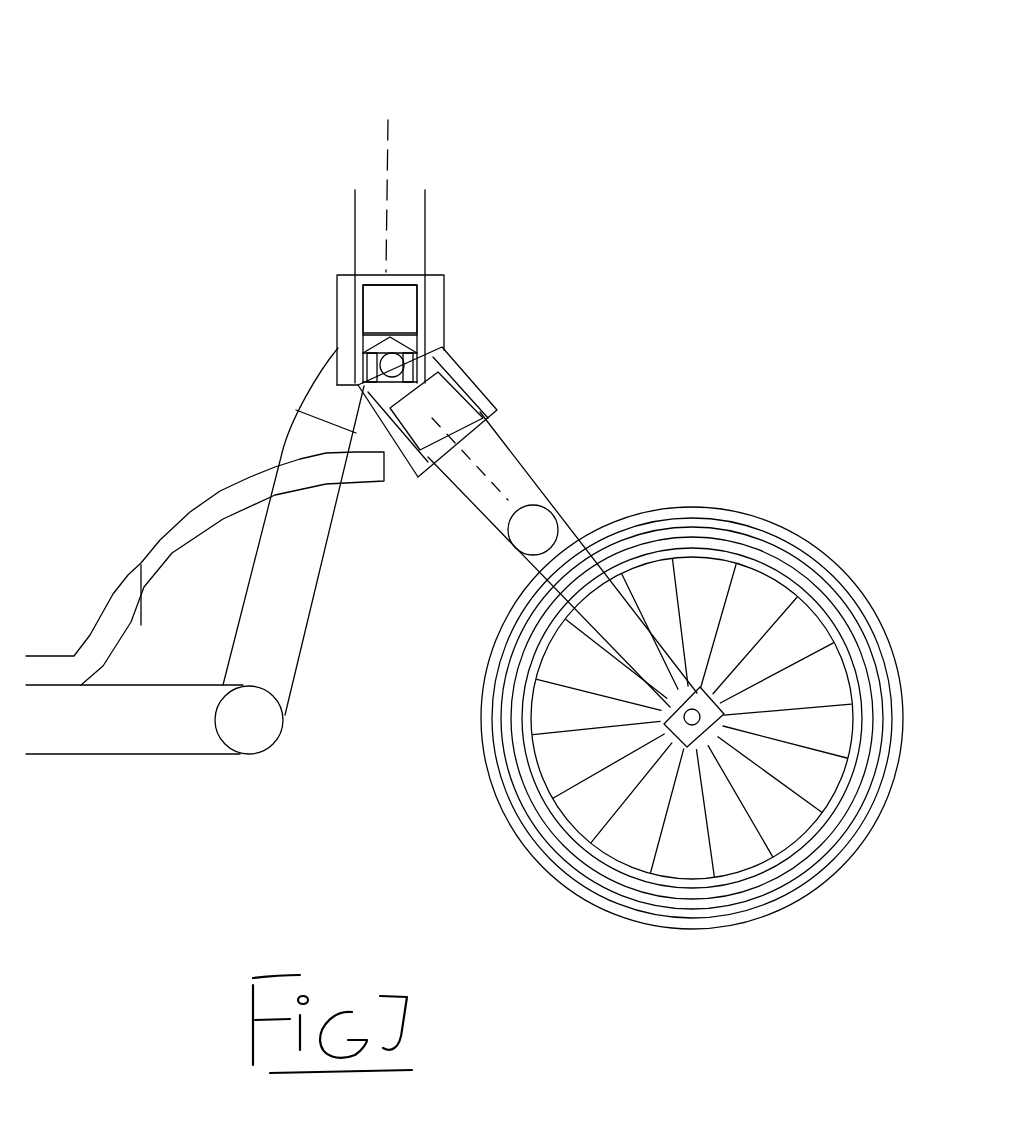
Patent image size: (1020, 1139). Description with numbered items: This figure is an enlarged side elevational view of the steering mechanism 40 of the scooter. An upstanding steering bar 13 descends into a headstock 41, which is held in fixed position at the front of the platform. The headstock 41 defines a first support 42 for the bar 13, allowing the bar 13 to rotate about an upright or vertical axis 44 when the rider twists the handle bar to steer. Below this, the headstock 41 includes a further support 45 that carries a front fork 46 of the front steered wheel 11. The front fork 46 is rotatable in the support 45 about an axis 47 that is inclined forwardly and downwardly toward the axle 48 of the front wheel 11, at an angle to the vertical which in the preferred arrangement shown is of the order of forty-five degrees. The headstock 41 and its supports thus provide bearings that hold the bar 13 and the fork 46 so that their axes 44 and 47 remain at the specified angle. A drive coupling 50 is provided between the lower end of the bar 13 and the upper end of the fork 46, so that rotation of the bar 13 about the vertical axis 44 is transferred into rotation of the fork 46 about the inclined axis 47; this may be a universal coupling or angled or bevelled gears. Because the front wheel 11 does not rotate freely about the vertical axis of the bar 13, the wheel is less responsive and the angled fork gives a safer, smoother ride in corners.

The front steered wheel 11 is at (697, 736).
The steering bar 13 is at (425, 213).
The steering mechanism 40 is at (396, 423).
The headstock 41 is at (447, 300).
The first support 42 is at (417, 280).
The upright or vertical axis 44 is at (392, 118).
The further support 45 is at (480, 386).
The front fork 46 is at (515, 466).
The axis 47 is at (478, 458).
The axle 48 is at (692, 717).
The drive coupling 50 is at (375, 345).